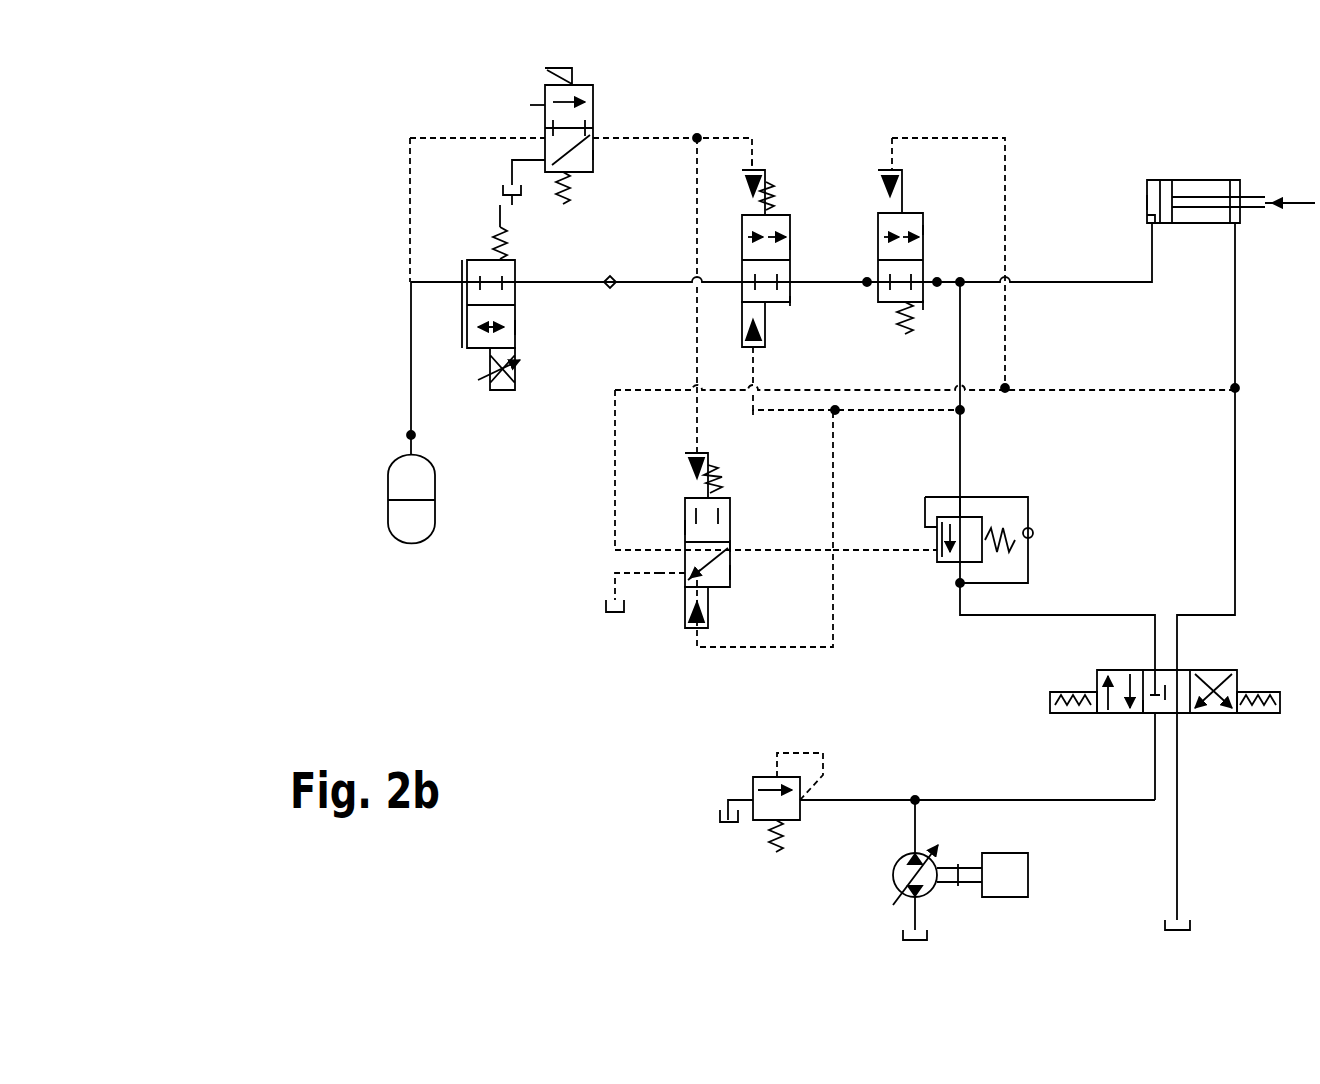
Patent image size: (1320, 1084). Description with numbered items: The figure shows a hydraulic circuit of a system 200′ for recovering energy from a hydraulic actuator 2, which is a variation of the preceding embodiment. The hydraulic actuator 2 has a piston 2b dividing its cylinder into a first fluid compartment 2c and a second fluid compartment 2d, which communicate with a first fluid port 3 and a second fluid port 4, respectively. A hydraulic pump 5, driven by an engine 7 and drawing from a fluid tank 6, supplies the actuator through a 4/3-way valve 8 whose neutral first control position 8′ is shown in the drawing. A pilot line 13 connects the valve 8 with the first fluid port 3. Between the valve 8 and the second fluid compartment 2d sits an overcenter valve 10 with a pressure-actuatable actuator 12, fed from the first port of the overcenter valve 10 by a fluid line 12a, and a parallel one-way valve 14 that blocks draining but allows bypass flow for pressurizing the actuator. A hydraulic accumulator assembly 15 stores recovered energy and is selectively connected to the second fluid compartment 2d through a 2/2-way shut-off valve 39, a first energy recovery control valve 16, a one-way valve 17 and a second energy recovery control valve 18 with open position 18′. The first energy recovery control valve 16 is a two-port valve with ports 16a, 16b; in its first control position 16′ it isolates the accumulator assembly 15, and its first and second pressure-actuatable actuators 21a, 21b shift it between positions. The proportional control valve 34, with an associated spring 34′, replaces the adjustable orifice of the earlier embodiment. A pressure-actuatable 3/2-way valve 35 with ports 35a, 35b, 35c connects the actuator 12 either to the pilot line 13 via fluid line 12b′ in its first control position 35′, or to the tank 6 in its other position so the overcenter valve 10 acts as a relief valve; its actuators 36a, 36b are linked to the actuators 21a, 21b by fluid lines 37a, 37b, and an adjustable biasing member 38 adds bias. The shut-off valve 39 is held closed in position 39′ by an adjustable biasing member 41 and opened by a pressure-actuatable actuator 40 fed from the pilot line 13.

The system 200′ is at (270, 656).
The hydraulic actuator 2 is at (1208, 165).
The piston 2b is at (1156, 195).
The first fluid compartment 2c is at (1205, 226).
The second fluid compartment 2d is at (1146, 200).
The first fluid port 3 is at (1238, 226).
The second fluid port 4 is at (1150, 226).
The hydraulic pump 5 is at (890, 872).
The fluid tank 6 is at (498, 198).
The engine 7 is at (1030, 885).
The 4/3-way valve 8 is at (1248, 746).
The first control position 8′ is at (1118, 725).
The overcenter valve 10 is at (975, 520).
The pressure-actuatable actuator 12 is at (935, 540).
The fluid line 12a is at (925, 500).
The fluid line 12b′ is at (615, 458).
The pilot line 13 is at (1240, 515).
The one-way valve 14 is at (1045, 530).
The hydraulic accumulator assembly 15 is at (395, 545).
The first energy recovery control valve 16 is at (806, 168).
The first control position 16′ is at (792, 306).
The fluid port 16a is at (792, 280).
The fluid port 16b is at (745, 318).
The one-way valve 17 is at (615, 268).
The second energy recovery control valve 18 is at (612, 108).
The open position 18′ is at (593, 157).
The first pressure-actuatable actuator 21a is at (760, 350).
The second pressure-actuatable actuator 21b is at (760, 165).
The proportional control valve 34 is at (460, 392).
The valve spring 34′ is at (517, 266).
The pressure-actuatable valve 35 is at (660, 640).
The first control position 35′ is at (736, 574).
The first fluid port 35a is at (685, 532).
The second fluid port 35b is at (733, 546).
The third fluid port 35c is at (685, 580).
The first pressure-actuatable actuator 36a is at (700, 640).
The second pressure-actuatable actuator 36b is at (690, 455).
The fluid line 37a is at (772, 650).
The fluid line 37b is at (690, 310).
The adjustable biasing member 38 is at (722, 465).
The 2/2-way shut-off valve 39 is at (930, 178).
The first control position 39′ is at (927, 310).
The pressure-actuatable actuator 40 is at (890, 172).
The adjustable biasing member 41 is at (900, 328).